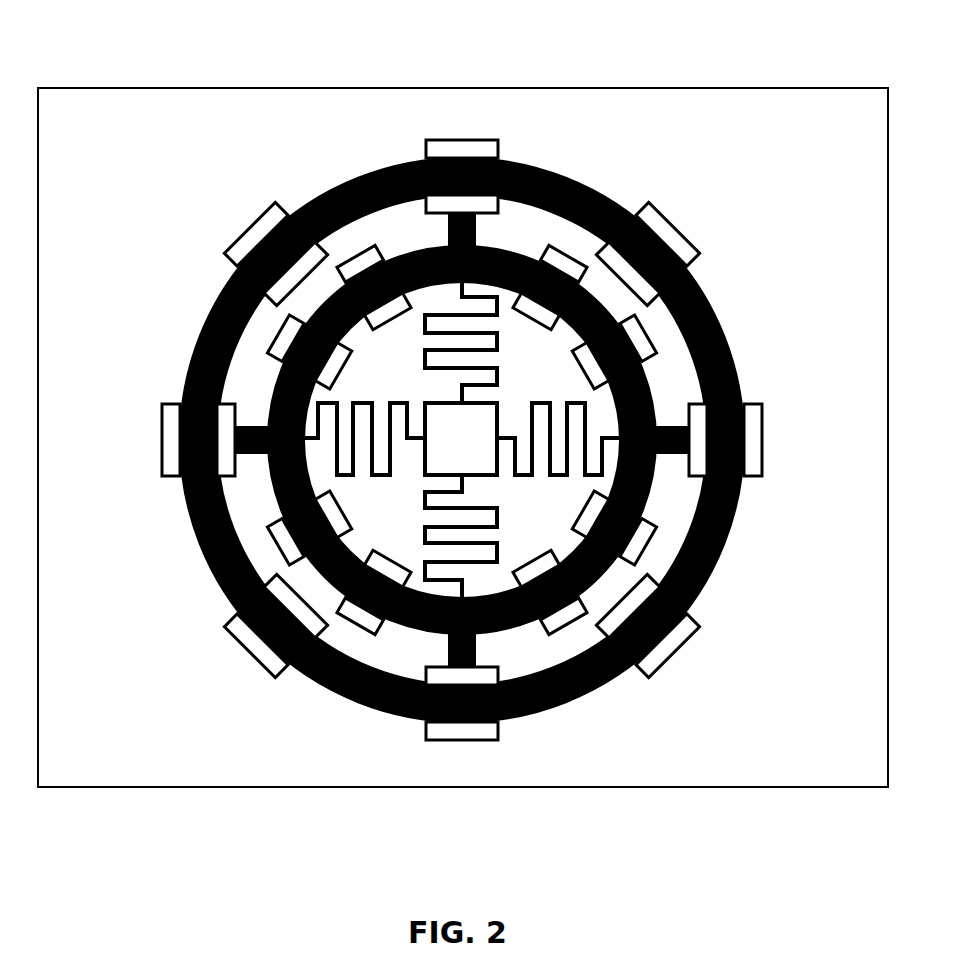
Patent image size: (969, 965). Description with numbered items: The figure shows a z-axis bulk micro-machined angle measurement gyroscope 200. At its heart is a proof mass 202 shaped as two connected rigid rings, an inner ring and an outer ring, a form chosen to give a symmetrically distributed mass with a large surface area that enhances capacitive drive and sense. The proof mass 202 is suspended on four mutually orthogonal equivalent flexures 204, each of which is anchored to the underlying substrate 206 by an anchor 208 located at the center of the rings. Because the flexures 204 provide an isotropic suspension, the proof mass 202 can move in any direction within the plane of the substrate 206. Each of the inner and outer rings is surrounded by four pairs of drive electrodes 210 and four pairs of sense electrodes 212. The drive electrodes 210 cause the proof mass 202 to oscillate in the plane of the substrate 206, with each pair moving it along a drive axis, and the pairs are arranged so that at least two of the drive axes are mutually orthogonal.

The z-axis bulk micro-machined angle measurement gyroscope 200 is at (511, 52).
The proof mass 202 is at (550, 707).
The flexures 204 is at (340, 477).
The substrate 206 is at (552, 788).
The anchor 208 is at (483, 472).
The drive electrodes 210 is at (672, 657).
The sense electrodes 212 is at (762, 477).